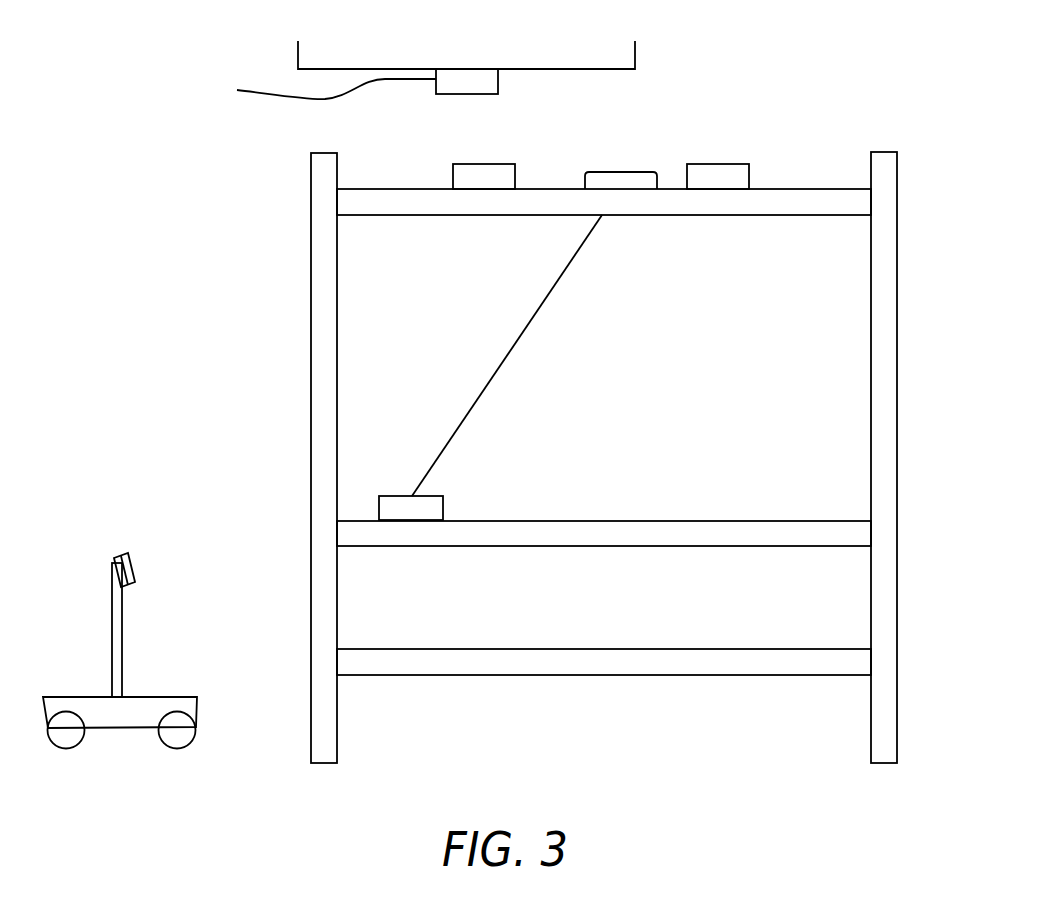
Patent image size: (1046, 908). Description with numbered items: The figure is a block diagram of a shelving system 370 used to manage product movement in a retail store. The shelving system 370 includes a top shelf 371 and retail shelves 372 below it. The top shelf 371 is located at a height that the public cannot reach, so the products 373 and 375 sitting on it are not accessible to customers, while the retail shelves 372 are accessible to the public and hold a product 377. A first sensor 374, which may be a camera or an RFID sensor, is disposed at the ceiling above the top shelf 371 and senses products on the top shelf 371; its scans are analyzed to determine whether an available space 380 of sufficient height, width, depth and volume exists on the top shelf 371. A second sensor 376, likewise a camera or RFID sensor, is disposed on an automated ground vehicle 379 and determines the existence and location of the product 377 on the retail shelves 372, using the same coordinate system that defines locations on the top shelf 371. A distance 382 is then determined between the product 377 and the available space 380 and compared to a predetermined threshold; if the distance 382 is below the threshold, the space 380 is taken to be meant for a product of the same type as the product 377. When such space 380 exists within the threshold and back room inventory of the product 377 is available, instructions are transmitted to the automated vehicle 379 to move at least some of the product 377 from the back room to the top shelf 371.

The shelving system 370 is at (230, 362).
The top shelf 371 is at (790, 202).
The retail shelves 372 is at (770, 533).
The product 373 is at (477, 174).
The first sensor 374 is at (313, 91).
The product 375 is at (722, 172).
The second sensor 376 is at (112, 562).
The product 377 is at (387, 507).
The automated ground vehicle 379 is at (157, 697).
The available space 380 is at (622, 172).
The distance 382 is at (500, 365).